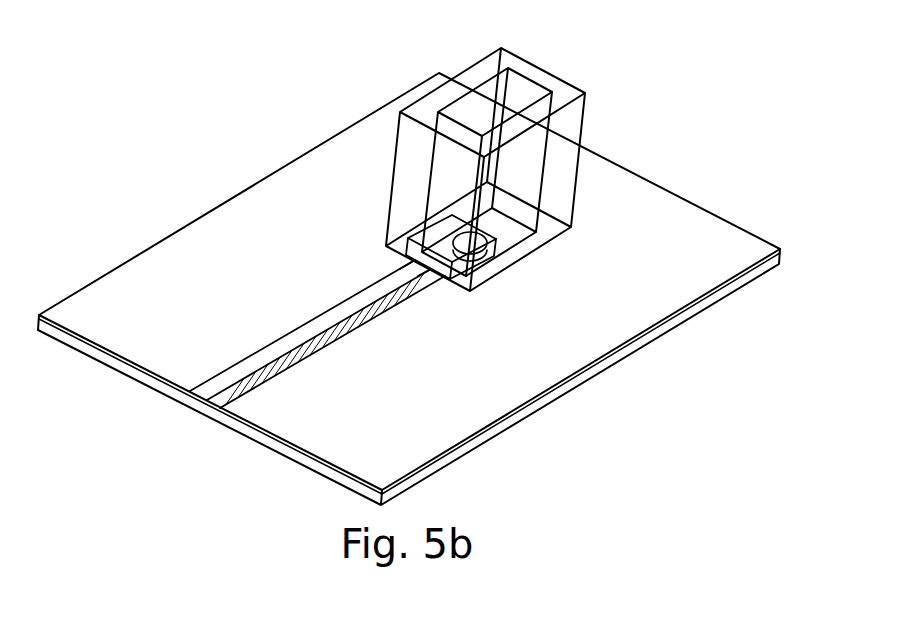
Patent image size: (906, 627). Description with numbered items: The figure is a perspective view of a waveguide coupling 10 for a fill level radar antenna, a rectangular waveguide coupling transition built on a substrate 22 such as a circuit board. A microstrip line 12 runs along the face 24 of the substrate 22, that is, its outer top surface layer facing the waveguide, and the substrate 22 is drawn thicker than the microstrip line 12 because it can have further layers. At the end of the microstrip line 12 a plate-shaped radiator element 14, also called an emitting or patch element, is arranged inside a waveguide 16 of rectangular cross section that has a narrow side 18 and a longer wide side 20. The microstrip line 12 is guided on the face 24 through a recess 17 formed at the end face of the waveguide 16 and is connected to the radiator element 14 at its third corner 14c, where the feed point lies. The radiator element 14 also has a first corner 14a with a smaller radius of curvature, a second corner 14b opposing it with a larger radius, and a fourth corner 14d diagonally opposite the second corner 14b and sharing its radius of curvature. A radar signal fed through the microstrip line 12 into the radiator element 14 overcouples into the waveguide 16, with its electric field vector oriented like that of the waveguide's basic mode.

The waveguide coupling 10 is at (662, 95).
The microstrip line 12 is at (207, 401).
The radiator element 14 is at (492, 250).
The first corner 14a is at (458, 222).
The second corner 14b is at (500, 248).
The third corner 14c is at (475, 270).
The fourth corner 14d is at (437, 234).
The waveguide 16 is at (570, 123).
The recess 17 is at (438, 282).
The narrow side 18 is at (545, 65).
The wide side 20 is at (558, 190).
The substrate 22 is at (650, 176).
The face 24 is at (693, 230).